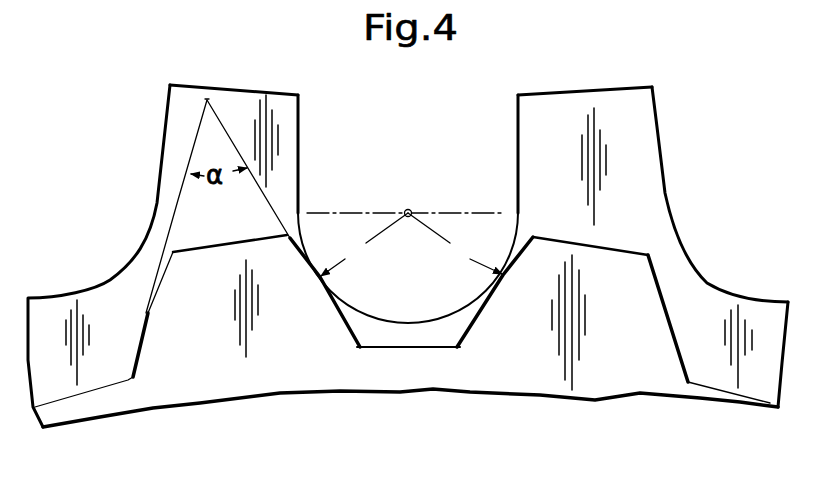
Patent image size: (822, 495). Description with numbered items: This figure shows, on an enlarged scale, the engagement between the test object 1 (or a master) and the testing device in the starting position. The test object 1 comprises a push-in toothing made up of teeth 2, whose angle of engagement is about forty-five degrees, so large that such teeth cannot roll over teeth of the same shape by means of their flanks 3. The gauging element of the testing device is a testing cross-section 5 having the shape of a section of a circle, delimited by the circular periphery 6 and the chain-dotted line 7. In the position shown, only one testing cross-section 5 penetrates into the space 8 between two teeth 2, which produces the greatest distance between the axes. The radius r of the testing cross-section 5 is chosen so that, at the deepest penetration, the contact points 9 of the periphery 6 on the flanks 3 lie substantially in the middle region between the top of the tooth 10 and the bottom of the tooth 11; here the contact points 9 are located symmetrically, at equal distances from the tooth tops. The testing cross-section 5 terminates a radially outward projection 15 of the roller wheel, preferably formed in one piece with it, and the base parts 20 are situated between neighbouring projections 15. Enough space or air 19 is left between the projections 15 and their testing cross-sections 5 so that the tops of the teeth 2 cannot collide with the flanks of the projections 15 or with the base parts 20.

The test object 1 is at (85, 395).
The teeth 2 is at (242, 255).
The flanks 3 is at (140, 340).
The testing cross-section 5 is at (448, 287).
The periphery 6 is at (425, 330).
The chain-dotted line 7 is at (367, 212).
The space 8 is at (457, 348).
The contact points 9 is at (318, 277).
The top of the tooth 10 is at (215, 247).
The bottom of the tooth 11 is at (362, 348).
The projections 15 is at (487, 130).
The space or air 19 is at (625, 177).
The base parts 20 is at (610, 90).